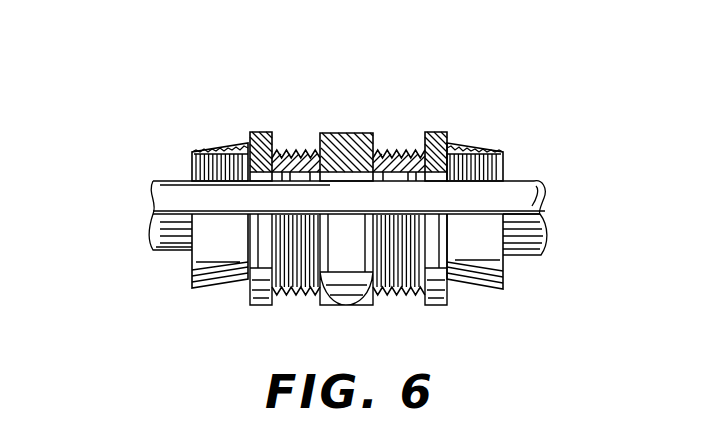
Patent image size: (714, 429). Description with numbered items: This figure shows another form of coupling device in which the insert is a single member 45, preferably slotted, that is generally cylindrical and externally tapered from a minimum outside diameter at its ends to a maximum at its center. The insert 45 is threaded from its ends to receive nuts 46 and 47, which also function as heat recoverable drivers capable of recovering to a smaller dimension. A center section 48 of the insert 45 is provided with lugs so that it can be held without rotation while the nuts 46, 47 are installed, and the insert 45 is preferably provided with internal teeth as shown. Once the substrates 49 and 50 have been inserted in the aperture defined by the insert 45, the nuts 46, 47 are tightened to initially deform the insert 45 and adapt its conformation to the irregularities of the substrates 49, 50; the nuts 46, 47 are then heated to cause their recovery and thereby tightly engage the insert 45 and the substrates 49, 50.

The insert 45 is at (298, 150).
The nut 46 is at (480, 148).
The nut 47 is at (227, 147).
The center section 48 is at (357, 133).
The substrate 49 is at (545, 235).
The substrate 50 is at (167, 204).